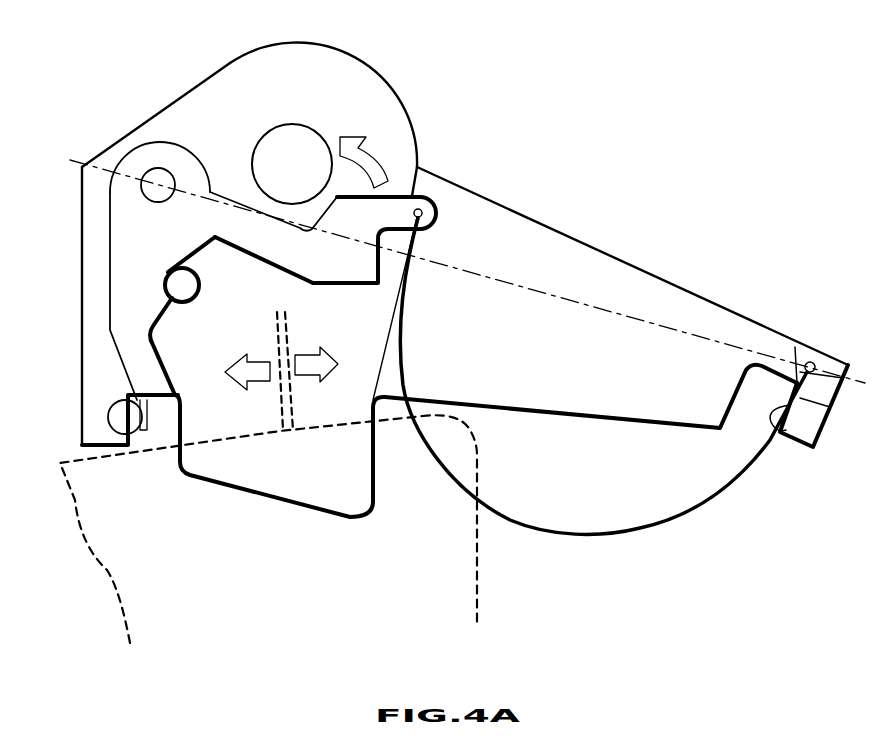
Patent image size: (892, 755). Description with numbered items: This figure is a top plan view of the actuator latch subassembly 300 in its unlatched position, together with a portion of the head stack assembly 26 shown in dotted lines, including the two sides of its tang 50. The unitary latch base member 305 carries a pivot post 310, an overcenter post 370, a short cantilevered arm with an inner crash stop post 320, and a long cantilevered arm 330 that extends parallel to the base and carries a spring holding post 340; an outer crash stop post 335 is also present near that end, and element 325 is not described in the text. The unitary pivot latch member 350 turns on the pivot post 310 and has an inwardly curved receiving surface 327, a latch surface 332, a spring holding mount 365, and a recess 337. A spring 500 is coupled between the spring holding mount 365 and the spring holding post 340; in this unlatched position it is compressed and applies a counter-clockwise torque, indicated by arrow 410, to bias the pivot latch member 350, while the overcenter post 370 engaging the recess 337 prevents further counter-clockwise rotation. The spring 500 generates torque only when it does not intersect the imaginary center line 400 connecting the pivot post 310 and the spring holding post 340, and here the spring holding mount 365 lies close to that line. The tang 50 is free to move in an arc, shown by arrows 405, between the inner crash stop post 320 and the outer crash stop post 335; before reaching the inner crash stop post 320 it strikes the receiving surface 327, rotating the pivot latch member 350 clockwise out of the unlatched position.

The head stack assembly 26 is at (479, 573).
The tang 50 is at (292, 394).
The actuator latch subassembly 300 is at (622, 96).
The unitary latch base member 305 is at (236, 78).
The pivot post 310 is at (147, 176).
The inner crash stop post 320 is at (112, 410).
The bracket 325 is at (140, 408).
The receiving surface 327 is at (162, 347).
The long cantilevered arm 330 is at (606, 260).
The latch surface 332 is at (268, 268).
The outer crash stop post 335 is at (810, 436).
The recess 337 is at (201, 254).
The spring holding post 340 is at (814, 353).
The unitary pivot latch member 350 is at (118, 252).
The spring holding mount 365 is at (396, 204).
The overcenter post 370 is at (198, 292).
The imaginary center line 400 is at (96, 166).
The arrows 405 is at (232, 366).
The arrow 410 is at (368, 157).
The spring 500 is at (697, 507).